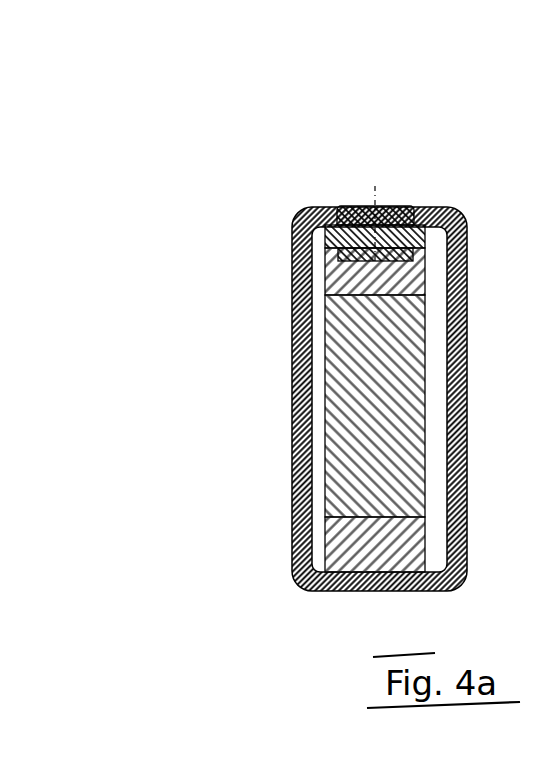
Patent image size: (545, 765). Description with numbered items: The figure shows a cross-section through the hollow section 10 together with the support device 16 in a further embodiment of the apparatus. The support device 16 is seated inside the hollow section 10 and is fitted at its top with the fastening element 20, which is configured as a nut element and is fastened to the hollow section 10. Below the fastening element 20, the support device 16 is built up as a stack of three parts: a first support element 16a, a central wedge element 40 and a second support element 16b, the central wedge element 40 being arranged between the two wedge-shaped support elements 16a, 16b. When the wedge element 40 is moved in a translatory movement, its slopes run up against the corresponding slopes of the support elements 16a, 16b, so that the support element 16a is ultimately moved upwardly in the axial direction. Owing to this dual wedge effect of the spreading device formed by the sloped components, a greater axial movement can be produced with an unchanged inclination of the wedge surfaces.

The hollow section 10 is at (450, 198).
The fastening element 20 is at (347, 197).
The support device 16 is at (172, 613).
The first support element 16a is at (325, 273).
The central wedge element 40 is at (325, 407).
The second support element 16b is at (325, 553).